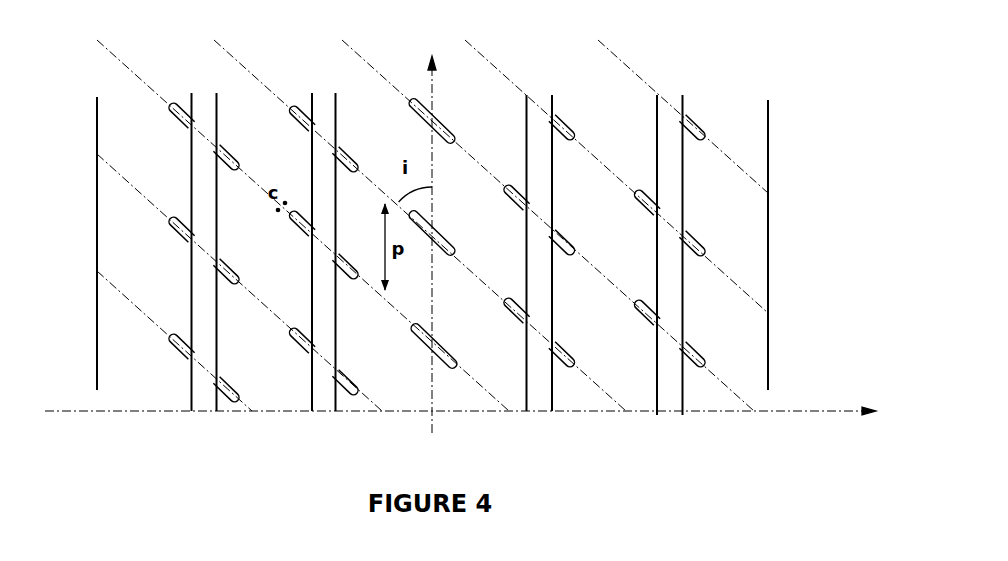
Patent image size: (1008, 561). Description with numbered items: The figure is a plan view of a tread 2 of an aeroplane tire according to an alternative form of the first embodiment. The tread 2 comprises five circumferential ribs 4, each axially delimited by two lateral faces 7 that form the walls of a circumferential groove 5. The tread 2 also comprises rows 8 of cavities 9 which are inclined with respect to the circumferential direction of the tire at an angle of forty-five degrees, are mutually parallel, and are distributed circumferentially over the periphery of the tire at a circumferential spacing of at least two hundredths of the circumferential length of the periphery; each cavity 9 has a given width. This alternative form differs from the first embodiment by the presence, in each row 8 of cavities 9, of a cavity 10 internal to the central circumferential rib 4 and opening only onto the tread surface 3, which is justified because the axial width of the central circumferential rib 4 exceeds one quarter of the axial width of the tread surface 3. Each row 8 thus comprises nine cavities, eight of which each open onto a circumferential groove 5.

The tread 2 is at (536, 47).
The tread surface 3 is at (737, 354).
The circumferential ribs 4 is at (455, 102).
The circumferential groove 5 is at (205, 100).
The lateral faces 7 is at (340, 105).
The rows of cavities 8 is at (135, 305).
The cavities 9 is at (343, 389).
The cavity internal to the central circumferential rib 10 is at (450, 358).